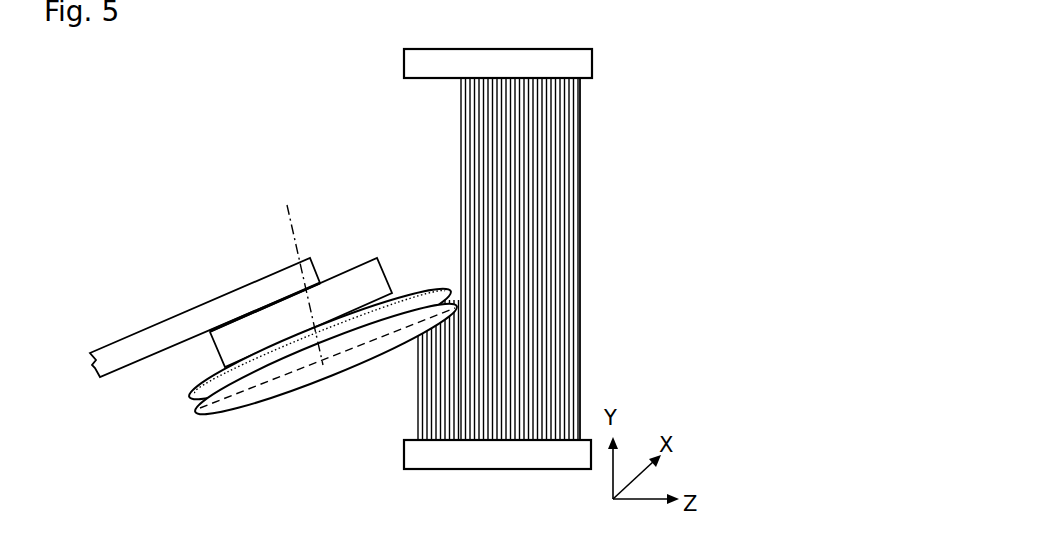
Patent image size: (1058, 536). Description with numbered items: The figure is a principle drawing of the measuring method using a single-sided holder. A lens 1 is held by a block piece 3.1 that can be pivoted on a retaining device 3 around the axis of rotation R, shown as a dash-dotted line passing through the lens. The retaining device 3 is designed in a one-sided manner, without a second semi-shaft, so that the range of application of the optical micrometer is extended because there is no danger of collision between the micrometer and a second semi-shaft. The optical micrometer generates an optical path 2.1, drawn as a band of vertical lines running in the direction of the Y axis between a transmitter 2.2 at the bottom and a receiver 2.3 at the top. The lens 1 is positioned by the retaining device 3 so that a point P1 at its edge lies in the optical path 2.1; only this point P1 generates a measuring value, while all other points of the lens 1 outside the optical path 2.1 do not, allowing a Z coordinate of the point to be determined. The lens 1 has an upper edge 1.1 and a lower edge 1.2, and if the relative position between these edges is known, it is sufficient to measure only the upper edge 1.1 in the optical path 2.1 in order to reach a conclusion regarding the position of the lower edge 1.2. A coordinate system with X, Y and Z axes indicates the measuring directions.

The lens 1 is at (300, 382).
The upper edge 1.1 is at (208, 421).
The lower edge 1.2 is at (194, 397).
The optical path 2.1 is at (570, 182).
The transmitter 2.2 is at (415, 458).
The receiver 2.3 is at (415, 58).
The retaining device 3 is at (228, 300).
The block piece 3.1 is at (370, 268).
The axis of rotation R is at (283, 213).
The point of the lens P1 is at (461, 306).